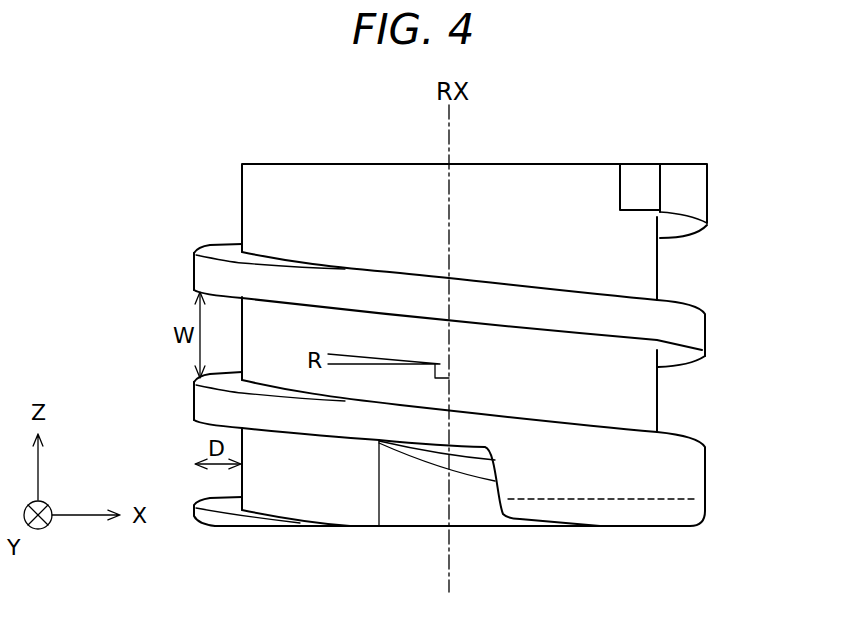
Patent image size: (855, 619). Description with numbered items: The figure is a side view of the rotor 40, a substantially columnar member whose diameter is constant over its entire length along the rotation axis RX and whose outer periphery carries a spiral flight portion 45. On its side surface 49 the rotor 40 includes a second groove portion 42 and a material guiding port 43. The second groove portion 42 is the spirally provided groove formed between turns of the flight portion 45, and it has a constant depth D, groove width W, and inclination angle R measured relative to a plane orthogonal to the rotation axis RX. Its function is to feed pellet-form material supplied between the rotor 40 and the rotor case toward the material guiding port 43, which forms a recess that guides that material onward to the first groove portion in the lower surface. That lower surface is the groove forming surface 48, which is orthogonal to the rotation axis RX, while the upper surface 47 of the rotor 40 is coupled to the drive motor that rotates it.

The rotor 40 is at (694, 118).
The second groove portion 42 is at (638, 409).
The material guiding port 43 is at (423, 501).
The flight portion 45 is at (207, 266).
The upper surface 47 is at (580, 151).
The groove forming surface 48 is at (540, 546).
The side surface 49 is at (128, 236).